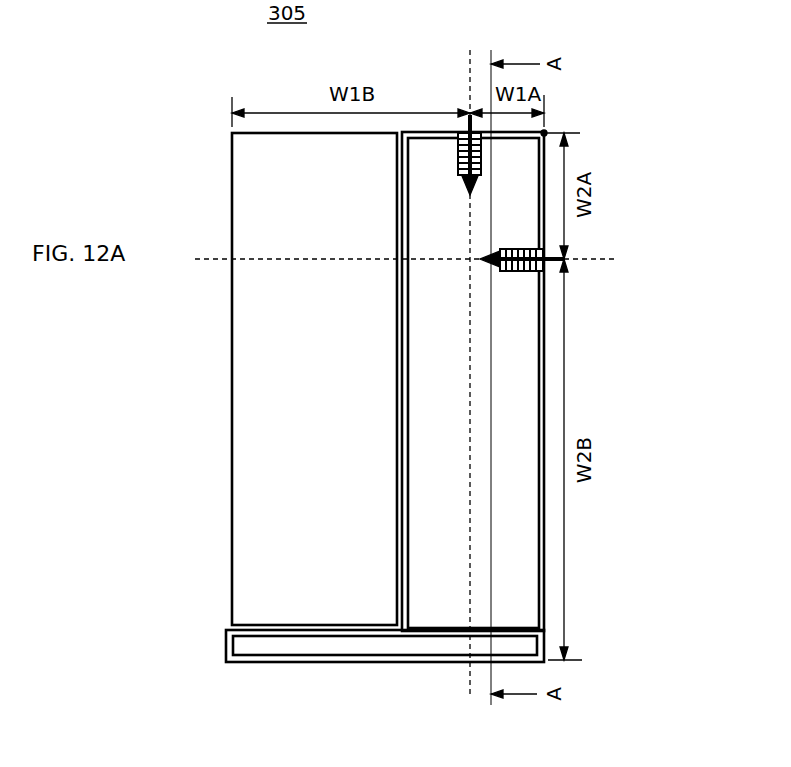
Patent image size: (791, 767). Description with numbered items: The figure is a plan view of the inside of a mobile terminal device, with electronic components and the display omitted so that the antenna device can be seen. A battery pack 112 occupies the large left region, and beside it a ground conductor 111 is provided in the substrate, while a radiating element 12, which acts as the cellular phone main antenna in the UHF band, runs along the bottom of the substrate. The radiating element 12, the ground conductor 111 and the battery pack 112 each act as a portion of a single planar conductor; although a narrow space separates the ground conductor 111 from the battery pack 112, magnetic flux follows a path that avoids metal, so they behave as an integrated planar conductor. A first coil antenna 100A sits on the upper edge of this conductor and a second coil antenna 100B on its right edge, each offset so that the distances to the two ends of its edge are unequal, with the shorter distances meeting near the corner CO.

The battery pack 112 is at (245, 407).
The ground conductor 111 is at (525, 535).
The radiating element 12 is at (383, 647).
The first coil antenna 100A is at (457, 157).
The second coil antenna 100B is at (520, 272).
The corner point CO is at (550, 127).